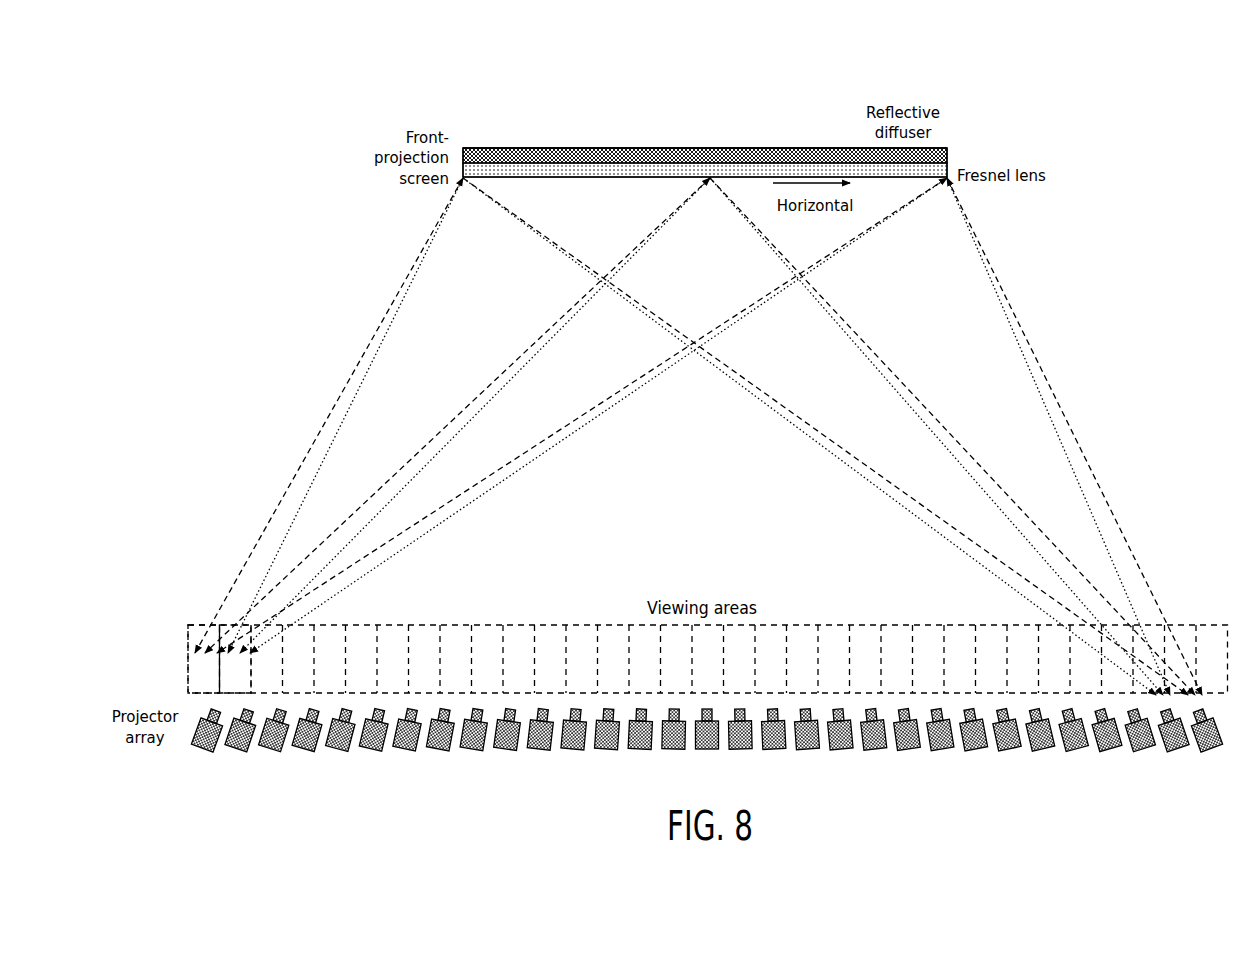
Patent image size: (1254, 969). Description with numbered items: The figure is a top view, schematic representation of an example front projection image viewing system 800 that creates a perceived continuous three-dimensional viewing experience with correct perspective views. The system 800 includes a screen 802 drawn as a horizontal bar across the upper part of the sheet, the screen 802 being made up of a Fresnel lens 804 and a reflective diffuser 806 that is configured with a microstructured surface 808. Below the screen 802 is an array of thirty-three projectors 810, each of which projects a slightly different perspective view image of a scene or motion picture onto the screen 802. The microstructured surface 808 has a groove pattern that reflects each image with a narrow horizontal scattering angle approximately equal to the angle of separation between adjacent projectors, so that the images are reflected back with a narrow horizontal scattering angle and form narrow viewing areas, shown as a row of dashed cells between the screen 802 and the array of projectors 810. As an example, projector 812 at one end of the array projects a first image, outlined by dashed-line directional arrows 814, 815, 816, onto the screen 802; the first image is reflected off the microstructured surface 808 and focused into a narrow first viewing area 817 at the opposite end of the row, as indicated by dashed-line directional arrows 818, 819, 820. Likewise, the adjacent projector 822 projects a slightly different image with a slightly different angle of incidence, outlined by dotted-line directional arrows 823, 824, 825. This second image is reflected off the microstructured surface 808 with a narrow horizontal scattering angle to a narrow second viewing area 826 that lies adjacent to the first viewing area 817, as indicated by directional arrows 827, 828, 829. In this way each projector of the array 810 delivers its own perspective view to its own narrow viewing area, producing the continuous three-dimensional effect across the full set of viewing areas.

The front projection image viewing system 800 is at (1034, 70).
The screen 802 is at (744, 162).
The Fresnel lens 804 is at (935, 179).
The reflective diffuser 806 is at (950, 158).
The microstructured surface 808 is at (736, 148).
The array of projectors 810 is at (710, 781).
The projector 812 is at (1210, 762).
The dashed-line directional arrow 814 is at (784, 405).
The dashed-line directional arrow 815 is at (881, 358).
The dashed-line directional arrow 816 is at (1025, 330).
The first viewing area 817 is at (197, 670).
The dashed-line directional arrow 818 is at (383, 320).
The dashed-line directional arrow 819 is at (519, 355).
The dashed-line directional arrow 820 is at (597, 405).
The projector 822 is at (1165, 760).
The dotted-line directional arrow 823 is at (831, 455).
The dotted-line directional arrow 824 is at (937, 440).
The dotted-line directional arrow 825 is at (1039, 397).
The second viewing area 826 is at (226, 625).
The directional arrow 827 is at (423, 263).
The directional arrow 828 is at (548, 345).
The directional arrow 829 is at (544, 454).